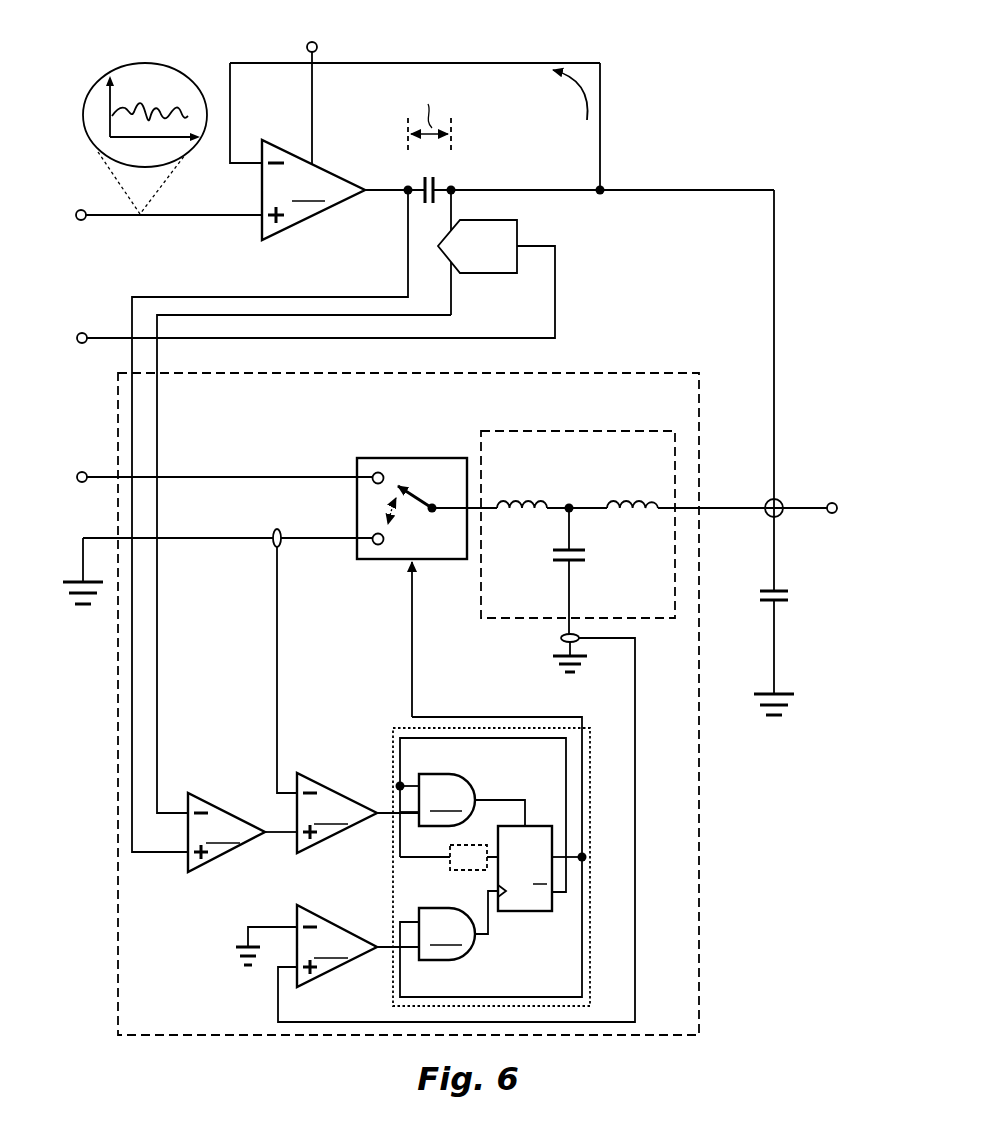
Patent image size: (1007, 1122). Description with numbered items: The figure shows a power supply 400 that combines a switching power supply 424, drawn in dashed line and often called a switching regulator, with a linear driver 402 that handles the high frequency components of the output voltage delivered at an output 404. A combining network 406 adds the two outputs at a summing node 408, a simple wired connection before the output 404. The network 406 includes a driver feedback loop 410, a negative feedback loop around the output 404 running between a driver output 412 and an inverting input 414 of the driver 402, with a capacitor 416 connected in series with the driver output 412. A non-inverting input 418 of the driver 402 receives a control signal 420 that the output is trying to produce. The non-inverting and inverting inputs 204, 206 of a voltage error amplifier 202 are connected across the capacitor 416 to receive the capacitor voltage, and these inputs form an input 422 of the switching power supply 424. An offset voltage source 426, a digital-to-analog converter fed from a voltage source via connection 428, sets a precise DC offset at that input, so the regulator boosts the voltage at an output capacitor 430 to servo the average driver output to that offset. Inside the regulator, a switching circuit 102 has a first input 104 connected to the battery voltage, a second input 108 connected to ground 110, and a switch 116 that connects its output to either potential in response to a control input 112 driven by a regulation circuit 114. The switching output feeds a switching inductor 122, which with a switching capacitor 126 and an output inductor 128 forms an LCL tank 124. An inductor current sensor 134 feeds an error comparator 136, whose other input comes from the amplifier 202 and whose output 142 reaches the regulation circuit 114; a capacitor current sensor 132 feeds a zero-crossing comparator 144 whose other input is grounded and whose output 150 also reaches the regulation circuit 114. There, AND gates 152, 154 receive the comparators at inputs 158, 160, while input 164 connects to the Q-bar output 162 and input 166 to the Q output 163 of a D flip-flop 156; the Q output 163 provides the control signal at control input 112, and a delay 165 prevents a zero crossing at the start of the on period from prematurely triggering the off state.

The power supply 400 is at (674, 39).
The linear driver 402 is at (313, 190).
The output 404 is at (832, 500).
The combining network 406 is at (704, 161).
The summing node 408 is at (768, 518).
The driver feedback loop 410 is at (587, 120).
The driver output 412 is at (386, 193).
The inverting input 414 is at (244, 160).
The capacitor 416 is at (452, 182).
The non-inverting input 418 is at (240, 218).
The control signal 420 is at (165, 62).
The input 422 is at (126, 283).
The switching power supply 424 is at (660, 372).
The offset voltage source 426 is at (458, 275).
The connection 428 is at (82, 333).
The output capacitor 430 is at (765, 603).
The switching circuit 102 is at (420, 458).
The first input 104 is at (350, 470).
The second input 108 is at (340, 535).
The ground 110 is at (90, 606).
The control input 112 is at (410, 598).
The regulation circuit 114 is at (393, 748).
The switch 116 is at (412, 498).
The switching inductor 122 is at (530, 500).
The LCL tank 124 is at (620, 431).
The switching capacitor 126 is at (560, 560).
The output inductor 128 is at (630, 500).
The capacitor current sensor 132 is at (560, 638).
The inductor current sensor 134 is at (272, 530).
The error comparator 136 is at (337, 813).
The output 142 is at (377, 806).
The comparator 144 is at (306, 946).
The output 150 is at (387, 943).
The AND gate 152 is at (472, 800).
The AND gate 154 is at (458, 925).
The D flip-flop 156 is at (513, 912).
The input 158 is at (404, 812).
The input 160 is at (410, 948).
The Q-bar output 162 is at (565, 895).
The Q output 163 is at (580, 786).
The input 164 is at (404, 786).
The delay 165 is at (468, 870).
The input 166 is at (410, 920).
The voltage error amplifier 202 is at (242, 832).
The non-inverting input 204 is at (163, 855).
The inverting input 206 is at (165, 808).